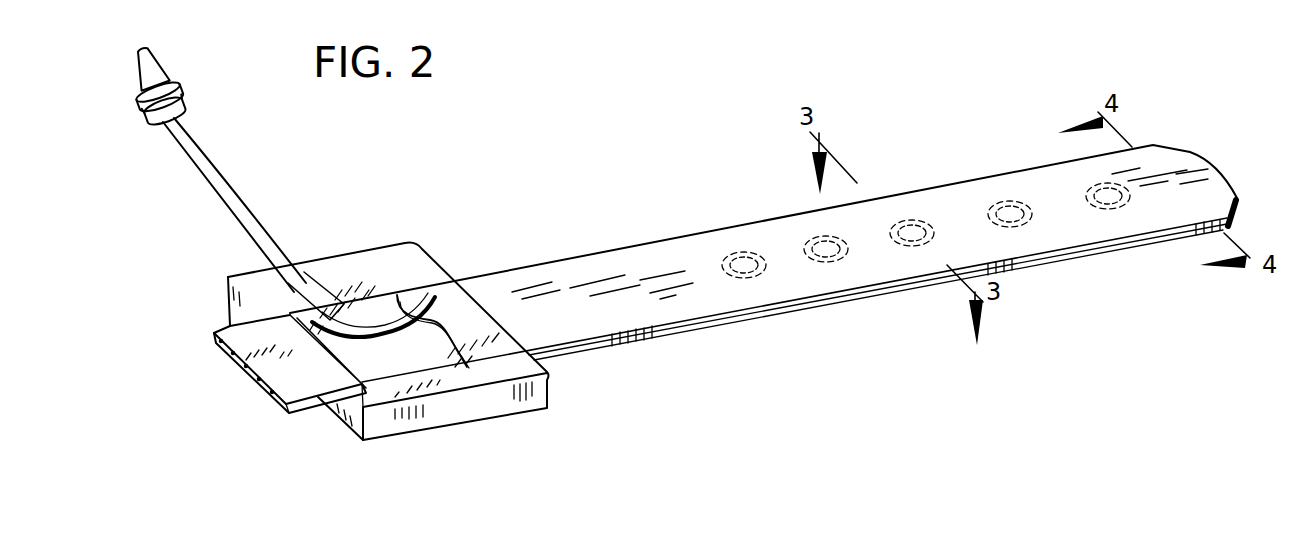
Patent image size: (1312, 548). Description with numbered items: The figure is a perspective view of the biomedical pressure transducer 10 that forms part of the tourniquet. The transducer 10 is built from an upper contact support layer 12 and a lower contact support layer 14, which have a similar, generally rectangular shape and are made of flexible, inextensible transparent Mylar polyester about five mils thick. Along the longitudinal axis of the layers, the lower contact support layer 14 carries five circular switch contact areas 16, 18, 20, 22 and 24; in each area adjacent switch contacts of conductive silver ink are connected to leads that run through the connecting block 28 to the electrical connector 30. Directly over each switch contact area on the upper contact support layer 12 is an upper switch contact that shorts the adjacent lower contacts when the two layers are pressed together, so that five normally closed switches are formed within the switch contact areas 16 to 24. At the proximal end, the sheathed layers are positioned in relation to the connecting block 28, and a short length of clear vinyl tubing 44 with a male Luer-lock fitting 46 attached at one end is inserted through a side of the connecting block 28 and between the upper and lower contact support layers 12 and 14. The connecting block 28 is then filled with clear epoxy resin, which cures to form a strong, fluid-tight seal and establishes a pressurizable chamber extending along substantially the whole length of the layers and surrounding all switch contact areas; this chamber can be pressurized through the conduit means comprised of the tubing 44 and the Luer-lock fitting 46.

The biomedical pressure transducer 10 is at (571, 203).
The upper contact support layer 12 is at (432, 293).
The lower contact support layer 14 is at (385, 310).
The switch contact area 16 is at (758, 273).
The switch contact area 18 is at (843, 258).
The switch contact area 20 is at (923, 220).
The switch contact area 22 is at (1014, 228).
The switch contact area 24 is at (1113, 211).
The connecting block 28 is at (473, 413).
The electrical connector 30 is at (268, 387).
The tubing 44 is at (210, 182).
The Luer-lock fitting 46 is at (167, 75).